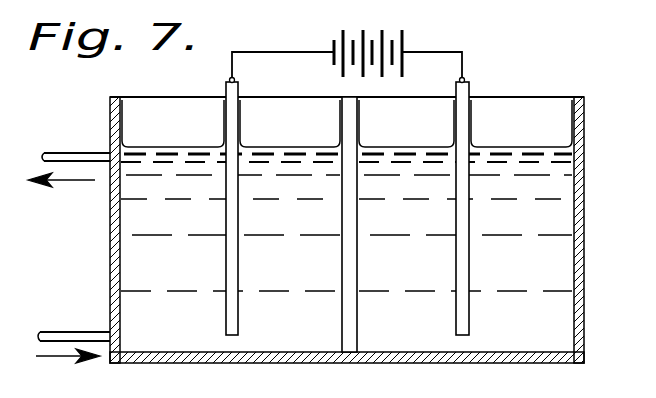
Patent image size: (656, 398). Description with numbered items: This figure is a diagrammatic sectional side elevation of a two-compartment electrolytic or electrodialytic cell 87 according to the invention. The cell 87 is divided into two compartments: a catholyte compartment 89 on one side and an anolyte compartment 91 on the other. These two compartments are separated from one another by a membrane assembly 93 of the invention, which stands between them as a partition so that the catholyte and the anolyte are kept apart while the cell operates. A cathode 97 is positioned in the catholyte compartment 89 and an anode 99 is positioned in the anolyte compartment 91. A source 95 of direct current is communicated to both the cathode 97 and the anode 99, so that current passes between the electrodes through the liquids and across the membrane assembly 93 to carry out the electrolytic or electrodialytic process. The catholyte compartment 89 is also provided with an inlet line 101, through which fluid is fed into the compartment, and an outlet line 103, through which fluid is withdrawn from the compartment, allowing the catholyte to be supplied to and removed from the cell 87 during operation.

The two-compartment electrolytic or electrodialytic cell 87 is at (596, 42).
The catholyte compartment 89 is at (126, 252).
The anolyte compartment 91 is at (525, 262).
The membrane assembly 93 is at (357, 250).
The source of current 95 is at (372, 22).
The cathode 97 is at (238, 248).
The anode 99 is at (470, 316).
The inlet line 101 is at (78, 332).
The outlet line 103 is at (76, 150).